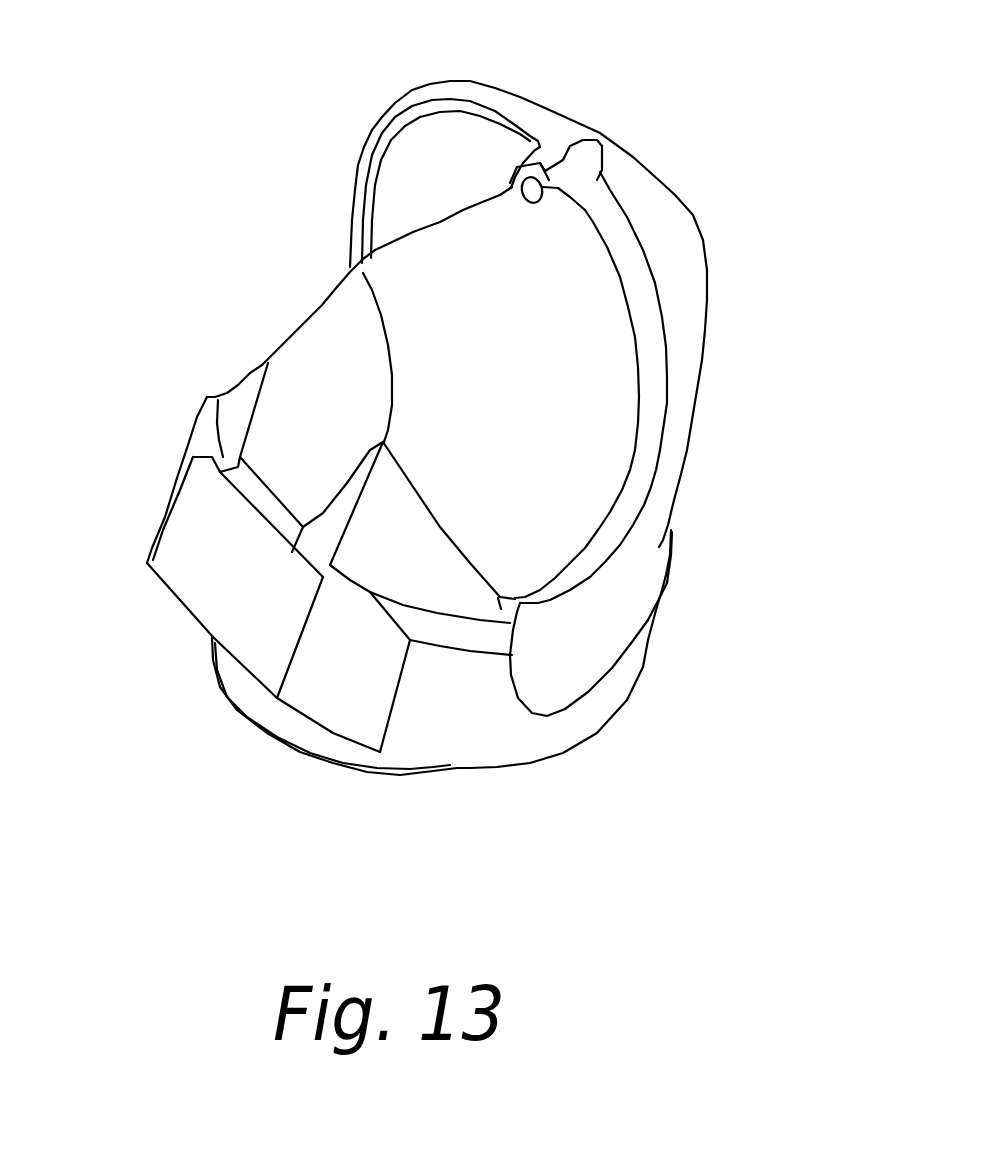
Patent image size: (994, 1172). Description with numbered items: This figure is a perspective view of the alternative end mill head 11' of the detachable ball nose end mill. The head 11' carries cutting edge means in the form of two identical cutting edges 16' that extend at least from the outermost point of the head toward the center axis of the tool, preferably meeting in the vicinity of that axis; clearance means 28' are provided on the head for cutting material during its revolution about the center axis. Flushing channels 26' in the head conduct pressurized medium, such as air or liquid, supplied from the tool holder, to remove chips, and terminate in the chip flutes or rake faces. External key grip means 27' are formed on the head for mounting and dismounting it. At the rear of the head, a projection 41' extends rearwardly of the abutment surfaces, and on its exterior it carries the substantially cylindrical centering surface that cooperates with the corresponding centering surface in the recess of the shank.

The mill head 11' is at (376, 428).
The cutting edges 16' is at (390, 150).
The channels 26' is at (642, 151).
The external key grip means 27' is at (298, 557).
The clearance means 28' is at (688, 444).
The projection 41' is at (321, 731).